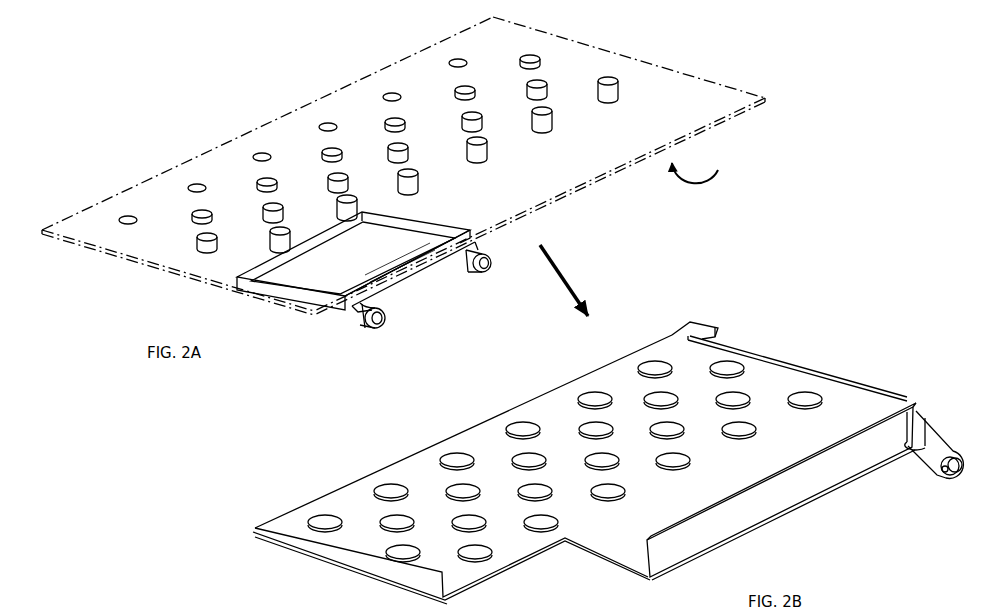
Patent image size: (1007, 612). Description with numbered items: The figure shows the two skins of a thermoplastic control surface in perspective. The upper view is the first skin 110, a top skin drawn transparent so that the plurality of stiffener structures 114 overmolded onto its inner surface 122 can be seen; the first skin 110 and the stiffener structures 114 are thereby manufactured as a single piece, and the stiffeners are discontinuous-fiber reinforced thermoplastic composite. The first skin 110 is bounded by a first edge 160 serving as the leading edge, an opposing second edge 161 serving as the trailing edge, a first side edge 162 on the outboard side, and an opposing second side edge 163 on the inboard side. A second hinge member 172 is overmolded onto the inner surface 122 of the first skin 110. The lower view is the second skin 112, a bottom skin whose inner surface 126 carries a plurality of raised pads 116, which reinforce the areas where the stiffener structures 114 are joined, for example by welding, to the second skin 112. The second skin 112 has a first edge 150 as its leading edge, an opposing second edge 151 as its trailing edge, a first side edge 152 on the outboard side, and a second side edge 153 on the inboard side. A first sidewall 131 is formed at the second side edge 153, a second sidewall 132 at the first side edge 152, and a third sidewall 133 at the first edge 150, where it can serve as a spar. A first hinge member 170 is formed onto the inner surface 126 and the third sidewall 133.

In FIG. 2A, the first skin 110 is at (403, 166).
In FIG. 2B, the second skin 112 is at (584, 457).
In FIG. 2A, the stiffener structures 114 is at (549, 98).
In FIG. 2B, the raised pads 116 is at (747, 419).
In FIG. 2A, the inner surface of first skin 122 is at (703, 166).
In FIG. 2B, the inner surface of second skin 126 is at (581, 422).
In FIG. 2B, the first sidewall 131 is at (368, 555).
In FIG. 2B, the second sidewall 132 is at (868, 395).
In FIG. 2B, the third sidewall 133 is at (742, 508).
In FIG. 2B, the first edge of second skin 150 is at (781, 491).
In FIG. 2B, the second edge of second skin 151 is at (450, 435).
In FIG. 2B, the first side edge of second skin 152 is at (720, 340).
In FIG. 2B, the second side edge of second skin 153 is at (358, 565).
In FIG. 2A, the first edge of first skin 160 is at (572, 204).
In FIG. 2A, the second edge of first skin 161 is at (278, 117).
In FIG. 2A, the first side edge of first skin 162 is at (677, 62).
In FIG. 2A, the second side edge of first skin 163 is at (172, 272).
In FIG. 2B, the first hinge member 170 is at (935, 421).
In FIG. 2A, the second hinge member 172 is at (415, 283).